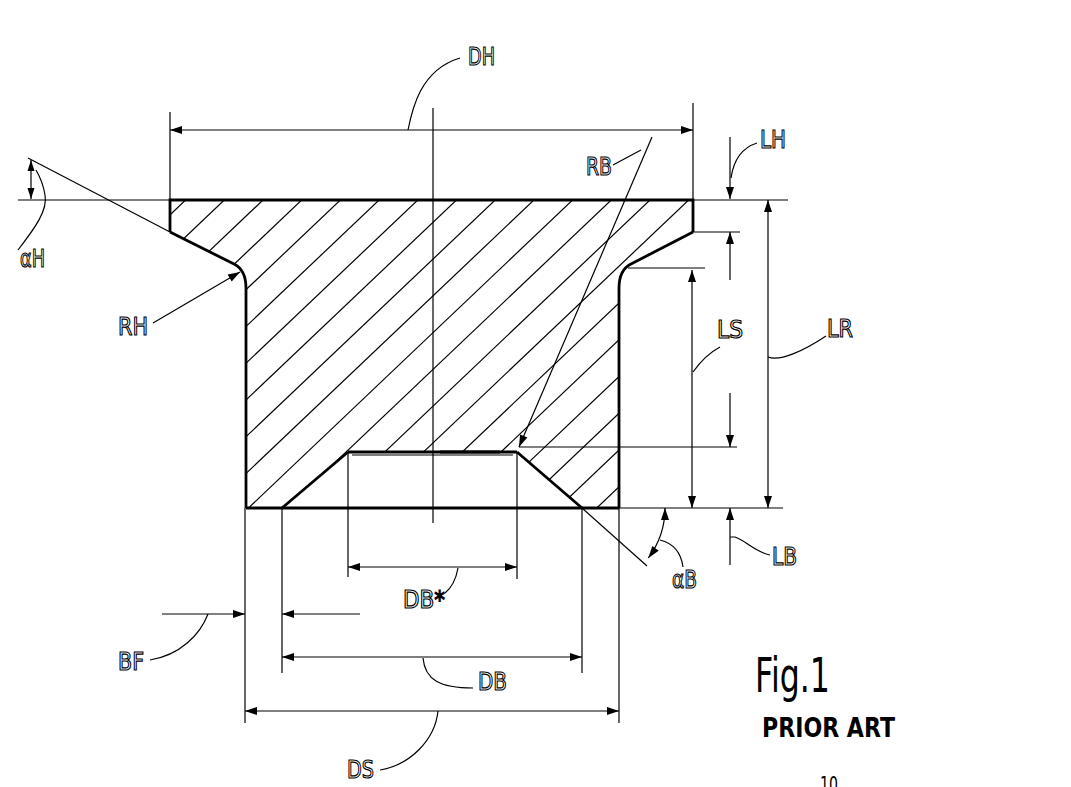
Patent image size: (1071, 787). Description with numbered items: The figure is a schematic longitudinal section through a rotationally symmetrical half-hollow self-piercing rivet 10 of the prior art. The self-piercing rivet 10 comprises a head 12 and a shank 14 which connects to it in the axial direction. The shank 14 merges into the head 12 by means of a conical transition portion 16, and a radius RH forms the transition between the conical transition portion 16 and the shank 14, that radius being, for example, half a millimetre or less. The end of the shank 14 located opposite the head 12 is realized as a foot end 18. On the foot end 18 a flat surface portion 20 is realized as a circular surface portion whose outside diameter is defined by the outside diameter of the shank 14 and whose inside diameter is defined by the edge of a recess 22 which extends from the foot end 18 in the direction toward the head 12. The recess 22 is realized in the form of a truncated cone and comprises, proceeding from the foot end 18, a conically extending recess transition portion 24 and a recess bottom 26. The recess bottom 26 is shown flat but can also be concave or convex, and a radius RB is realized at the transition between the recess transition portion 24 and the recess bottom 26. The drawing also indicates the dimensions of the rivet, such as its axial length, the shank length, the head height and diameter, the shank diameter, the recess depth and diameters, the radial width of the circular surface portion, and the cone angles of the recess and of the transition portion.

The self-piercing rivet 10 is at (723, 113).
The head 12 is at (190, 218).
The shank 14 is at (270, 370).
The transition portion 16 is at (204, 254).
The foot end 18 is at (310, 512).
The flat surface portion 20 is at (272, 520).
The recess 22 is at (372, 473).
The recess transition portion 24 is at (540, 480).
The recess bottom 26 is at (467, 452).